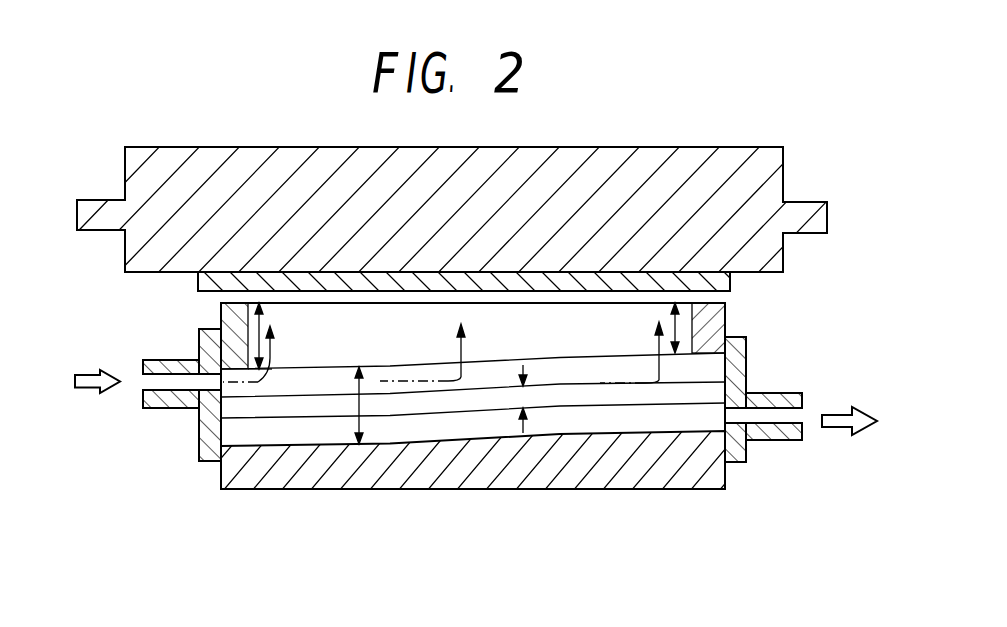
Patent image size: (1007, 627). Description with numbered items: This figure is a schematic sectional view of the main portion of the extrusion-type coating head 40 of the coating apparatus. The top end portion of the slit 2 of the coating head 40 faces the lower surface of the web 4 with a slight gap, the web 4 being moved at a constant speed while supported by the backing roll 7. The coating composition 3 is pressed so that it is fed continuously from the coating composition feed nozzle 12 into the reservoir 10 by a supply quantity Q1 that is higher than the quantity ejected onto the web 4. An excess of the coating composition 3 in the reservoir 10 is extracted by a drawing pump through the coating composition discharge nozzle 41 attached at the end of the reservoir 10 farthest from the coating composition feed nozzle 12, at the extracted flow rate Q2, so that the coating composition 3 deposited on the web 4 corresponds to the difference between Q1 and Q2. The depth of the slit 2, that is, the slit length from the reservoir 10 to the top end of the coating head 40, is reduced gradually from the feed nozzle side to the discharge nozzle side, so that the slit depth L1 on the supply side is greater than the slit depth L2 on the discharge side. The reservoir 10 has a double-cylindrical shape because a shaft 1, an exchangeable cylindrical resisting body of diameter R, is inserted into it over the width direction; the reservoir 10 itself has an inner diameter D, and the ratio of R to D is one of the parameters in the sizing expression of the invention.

The shaft 1 is at (641, 400).
The slit 2 is at (391, 347).
The coating composition 3 is at (272, 358).
The web 4 is at (732, 282).
The backing roll 7 is at (768, 168).
The reservoir 10 is at (612, 440).
The coating composition feed nozzle 12 is at (181, 405).
The coating head 40 is at (436, 551).
The coating composition discharge nozzle 41 is at (786, 432).
The slit depth on supply side L1 is at (248, 328).
The slit depth on discharge side L2 is at (680, 331).
The inner diameter of reservoir D is at (357, 424).
The diameter of shaft R is at (515, 418).
The supply quantity Q1 is at (96, 366).
The extracted flow rate Q2 is at (848, 408).